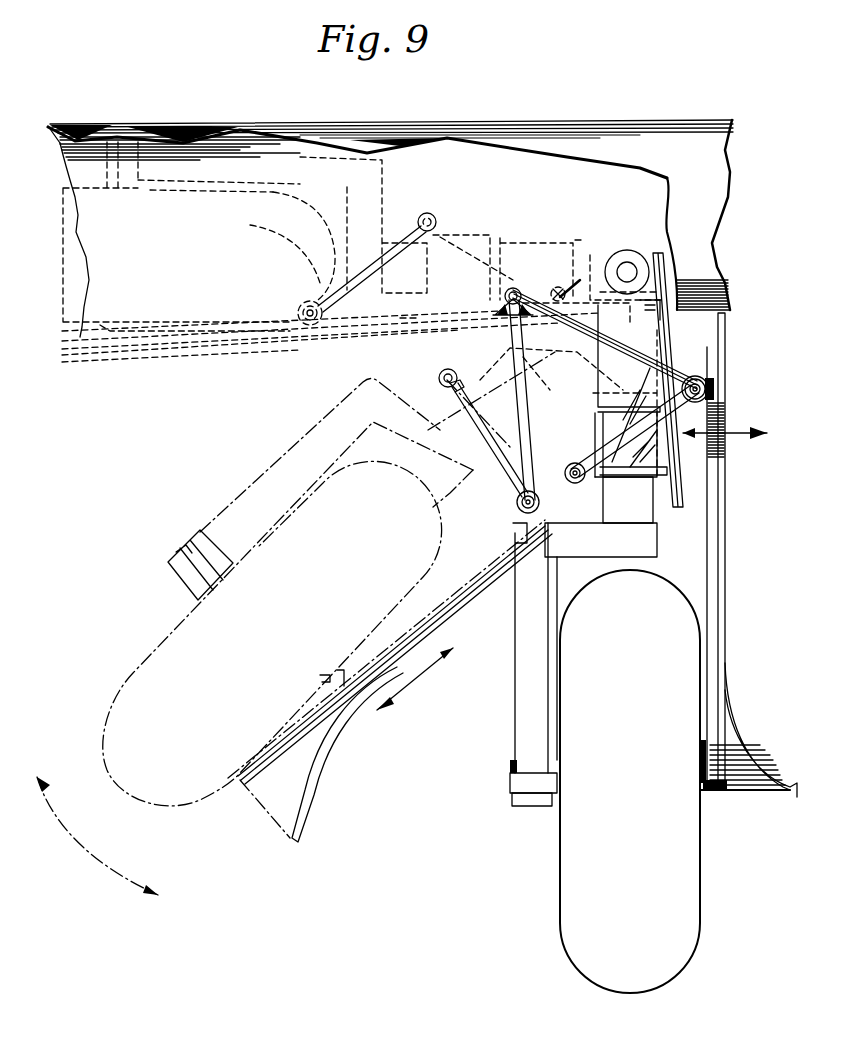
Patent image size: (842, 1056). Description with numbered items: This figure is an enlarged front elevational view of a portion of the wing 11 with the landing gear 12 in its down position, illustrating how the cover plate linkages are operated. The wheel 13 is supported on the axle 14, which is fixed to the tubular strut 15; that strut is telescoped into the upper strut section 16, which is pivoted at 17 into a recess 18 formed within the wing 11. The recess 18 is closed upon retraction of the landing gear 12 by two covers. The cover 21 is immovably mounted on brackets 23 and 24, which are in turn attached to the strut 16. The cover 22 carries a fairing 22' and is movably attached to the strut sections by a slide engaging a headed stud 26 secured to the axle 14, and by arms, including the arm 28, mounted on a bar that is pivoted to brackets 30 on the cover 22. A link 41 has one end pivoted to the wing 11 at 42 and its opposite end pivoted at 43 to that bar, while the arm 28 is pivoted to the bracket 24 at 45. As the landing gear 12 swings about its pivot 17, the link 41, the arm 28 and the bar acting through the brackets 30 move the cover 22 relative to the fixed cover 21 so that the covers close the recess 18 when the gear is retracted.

The wing section 11 is at (390, 213).
The landing gear assembly 12 is at (392, 679).
The wheel 13 is at (368, 686).
The axle 14 is at (721, 799).
The tubular strut 15 is at (601, 517).
The upper strut section 16 is at (608, 435).
The pivot 17 is at (594, 265).
The recess 18 is at (331, 269).
The cover 21 is at (712, 380).
The cover 22 is at (535, 577).
The fairing 22' is at (748, 762).
The bracket 23 is at (674, 327).
The bracket 24 is at (651, 500).
The headed stud 26 is at (668, 752).
The arm 28 is at (485, 368).
The bracket 30 is at (692, 381).
The link 41 is at (380, 391).
The pivot 42 is at (529, 286).
The pivot 43 is at (496, 313).
The pivot 45 is at (501, 356).